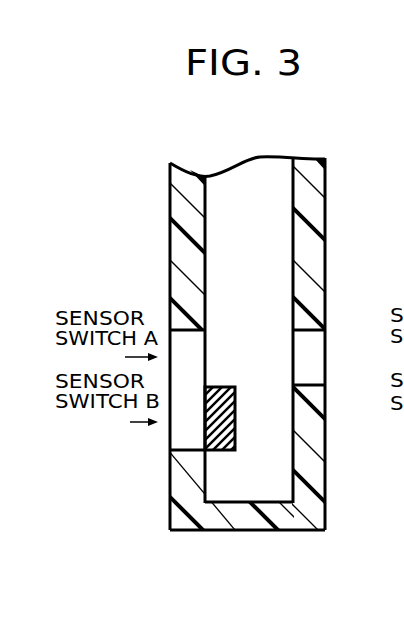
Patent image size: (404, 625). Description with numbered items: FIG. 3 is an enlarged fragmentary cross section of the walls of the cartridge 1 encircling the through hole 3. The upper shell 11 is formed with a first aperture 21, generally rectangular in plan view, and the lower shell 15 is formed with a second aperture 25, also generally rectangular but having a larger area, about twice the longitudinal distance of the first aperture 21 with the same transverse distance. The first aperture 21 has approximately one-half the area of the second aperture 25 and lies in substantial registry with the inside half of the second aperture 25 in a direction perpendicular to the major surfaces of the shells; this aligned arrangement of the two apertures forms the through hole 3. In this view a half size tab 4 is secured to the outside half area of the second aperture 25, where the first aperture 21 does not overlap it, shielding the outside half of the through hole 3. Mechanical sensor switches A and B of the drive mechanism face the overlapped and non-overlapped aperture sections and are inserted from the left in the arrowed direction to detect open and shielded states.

The cartridge 1 is at (342, 158).
The through hole 3 is at (272, 360).
The half size tab 4 is at (218, 440).
The upper shell 11 is at (315, 214).
The lower shell 15 is at (181, 205).
The first aperture 21 is at (310, 338).
The second aperture 25 is at (184, 429).